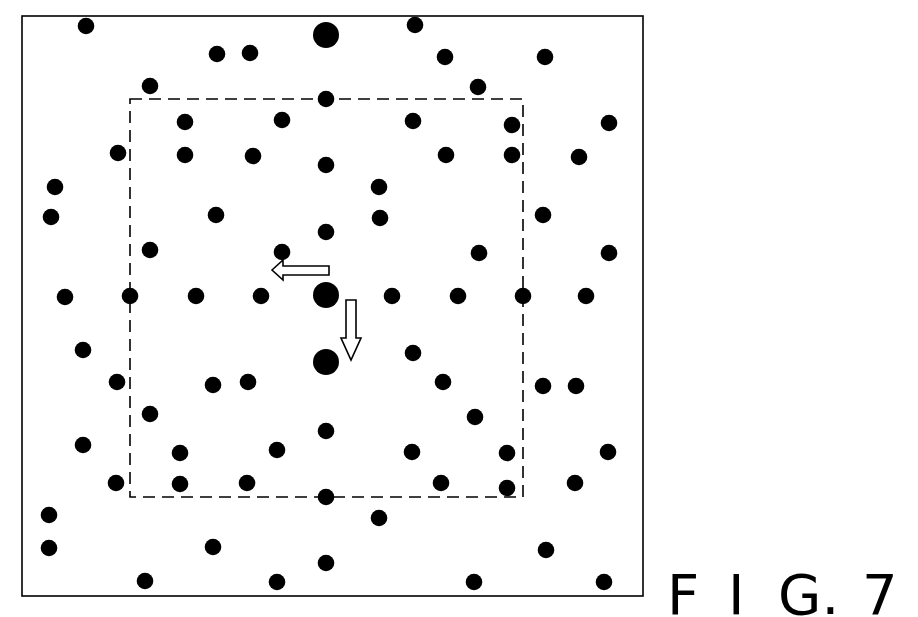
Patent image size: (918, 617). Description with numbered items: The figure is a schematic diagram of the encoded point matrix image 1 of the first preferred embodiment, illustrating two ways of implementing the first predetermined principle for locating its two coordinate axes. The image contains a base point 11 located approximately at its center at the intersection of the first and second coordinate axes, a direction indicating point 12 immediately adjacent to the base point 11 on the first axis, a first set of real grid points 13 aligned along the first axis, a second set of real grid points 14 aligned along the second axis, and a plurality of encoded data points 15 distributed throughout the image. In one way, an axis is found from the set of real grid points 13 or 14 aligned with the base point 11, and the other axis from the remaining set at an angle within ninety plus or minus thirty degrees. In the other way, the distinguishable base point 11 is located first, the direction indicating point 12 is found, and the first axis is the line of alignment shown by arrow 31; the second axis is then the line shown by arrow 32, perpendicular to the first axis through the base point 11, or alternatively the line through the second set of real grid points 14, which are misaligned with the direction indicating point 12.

The encoded point matrix image 1 is at (523, 337).
The base point 11 is at (336, 283).
The direction indicating point 12 is at (334, 372).
The first set of real grid points 13 is at (327, 105).
The second set of real grid points 14 is at (136, 298).
The encoded data points 15 is at (247, 483).
The arrow 31 is at (356, 323).
The arrow 32 is at (306, 260).